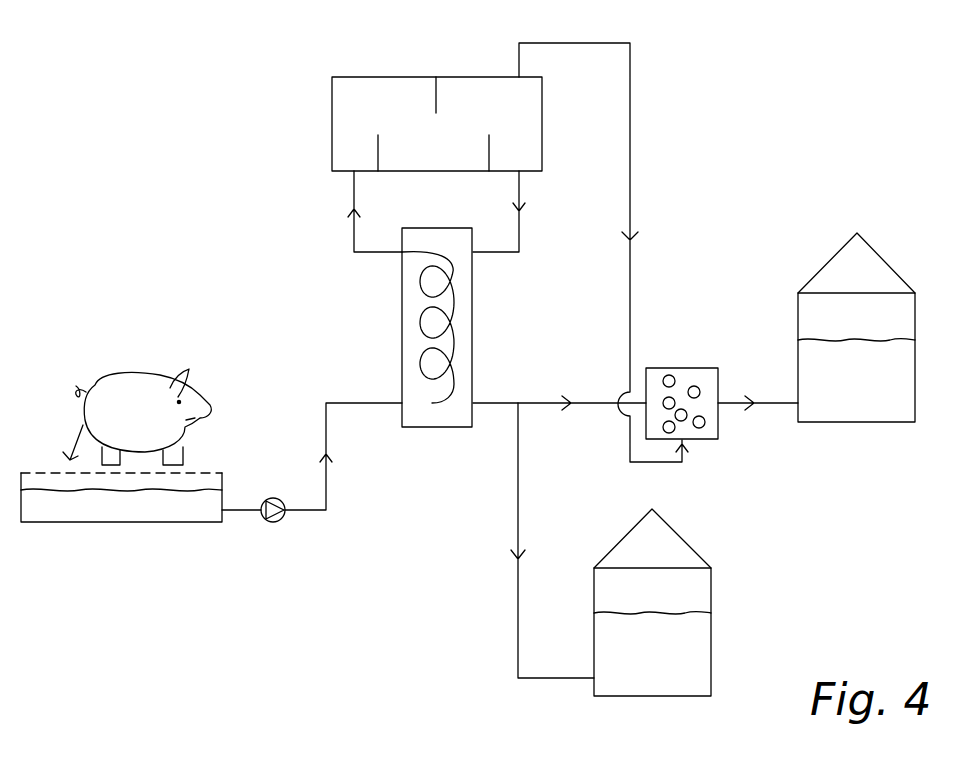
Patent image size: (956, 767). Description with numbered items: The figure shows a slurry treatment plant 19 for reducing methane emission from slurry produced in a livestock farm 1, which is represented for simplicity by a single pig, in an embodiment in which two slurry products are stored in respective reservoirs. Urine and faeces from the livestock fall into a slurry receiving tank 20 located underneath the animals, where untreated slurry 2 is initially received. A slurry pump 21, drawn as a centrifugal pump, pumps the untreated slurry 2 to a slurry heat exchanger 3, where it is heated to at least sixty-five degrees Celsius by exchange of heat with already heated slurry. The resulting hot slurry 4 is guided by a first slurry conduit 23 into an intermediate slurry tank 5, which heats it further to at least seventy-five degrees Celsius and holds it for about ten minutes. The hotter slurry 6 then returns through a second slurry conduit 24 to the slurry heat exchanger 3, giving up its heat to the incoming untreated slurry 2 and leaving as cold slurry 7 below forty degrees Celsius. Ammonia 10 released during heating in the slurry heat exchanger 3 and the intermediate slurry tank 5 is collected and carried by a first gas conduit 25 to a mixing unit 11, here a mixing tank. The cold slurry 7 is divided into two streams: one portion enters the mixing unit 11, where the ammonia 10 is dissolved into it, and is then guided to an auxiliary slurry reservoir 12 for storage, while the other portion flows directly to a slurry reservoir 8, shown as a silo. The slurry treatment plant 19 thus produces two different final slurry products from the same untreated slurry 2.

The livestock farm 1 is at (74, 318).
The untreated slurry 2 is at (347, 402).
The slurry heat exchanger 3 is at (473, 325).
The at least 65° Celsius hot slurry 4 is at (328, 211).
The first slurry conduit 23 is at (354, 240).
The intermediate slurry tank 5 is at (392, 76).
The at least 75° Celsius hot slurry 6 is at (544, 211).
The second slurry conduit 24 is at (519, 238).
The at least below 40° Celsius cold slurry 7 is at (587, 408).
The slurry reservoir 8 is at (711, 588).
The ammonia 10 is at (631, 252).
The first gas conduit 25 is at (630, 100).
The mixing unit 11 is at (688, 368).
The auxiliary slurry reservoir 12 is at (848, 422).
The slurry treatment plant 19 is at (208, 150).
The slurry receiving tank 20 is at (130, 522).
The slurry pump 21 is at (276, 522).